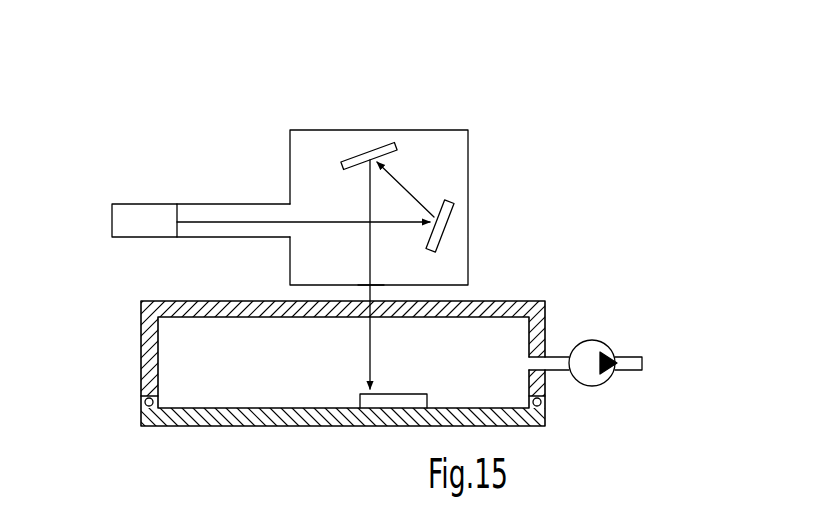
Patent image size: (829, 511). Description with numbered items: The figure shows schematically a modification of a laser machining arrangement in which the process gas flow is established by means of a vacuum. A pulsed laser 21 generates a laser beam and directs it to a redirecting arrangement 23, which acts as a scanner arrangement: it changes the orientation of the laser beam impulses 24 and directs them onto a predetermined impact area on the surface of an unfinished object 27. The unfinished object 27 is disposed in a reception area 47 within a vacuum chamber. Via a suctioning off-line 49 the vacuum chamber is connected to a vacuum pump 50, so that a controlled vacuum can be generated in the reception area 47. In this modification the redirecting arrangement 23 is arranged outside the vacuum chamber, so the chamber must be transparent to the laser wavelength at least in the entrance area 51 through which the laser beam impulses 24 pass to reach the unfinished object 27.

The pulsed laser 21 is at (147, 217).
The redirecting arrangement 23 is at (444, 162).
The laser beam impulses 24 is at (367, 345).
The unfinished object 27 is at (395, 400).
The reception area 47 is at (203, 360).
The suctioning off-line 49 is at (558, 367).
The vacuum pump 50 is at (592, 347).
The entrance area 51 is at (371, 298).